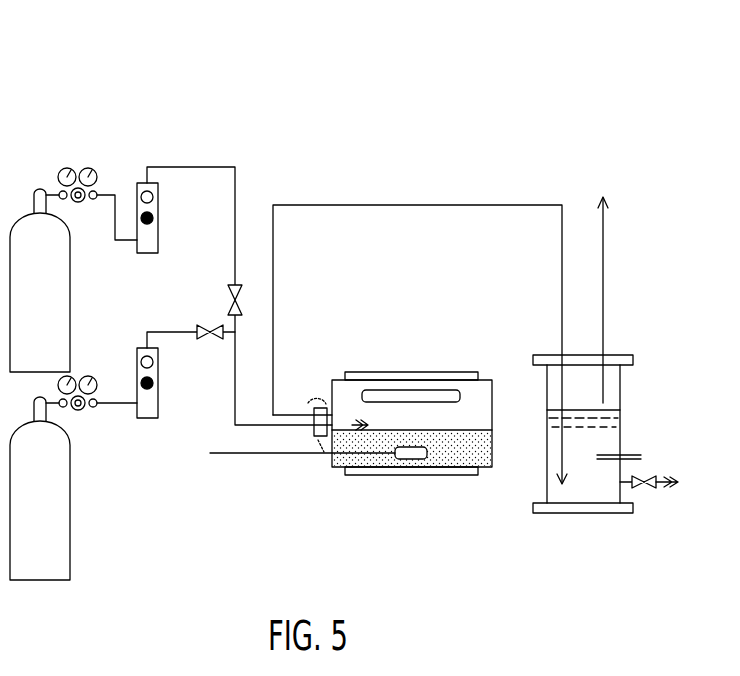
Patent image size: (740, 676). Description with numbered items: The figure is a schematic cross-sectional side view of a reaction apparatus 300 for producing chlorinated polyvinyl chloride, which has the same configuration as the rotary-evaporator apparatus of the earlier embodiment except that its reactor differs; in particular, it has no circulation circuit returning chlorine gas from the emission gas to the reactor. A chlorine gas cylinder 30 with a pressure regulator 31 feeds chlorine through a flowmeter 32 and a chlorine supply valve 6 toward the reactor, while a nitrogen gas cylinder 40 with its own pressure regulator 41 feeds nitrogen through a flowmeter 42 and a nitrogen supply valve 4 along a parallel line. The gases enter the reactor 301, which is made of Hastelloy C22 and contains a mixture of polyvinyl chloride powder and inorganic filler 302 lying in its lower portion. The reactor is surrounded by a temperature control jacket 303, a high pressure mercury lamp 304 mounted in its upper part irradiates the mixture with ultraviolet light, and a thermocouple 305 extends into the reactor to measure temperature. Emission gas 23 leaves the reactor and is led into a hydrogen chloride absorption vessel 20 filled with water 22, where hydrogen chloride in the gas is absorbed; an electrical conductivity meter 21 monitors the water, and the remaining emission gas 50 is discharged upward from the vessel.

The reaction apparatus 300 is at (148, 80).
The chlorine gas cylinder 30 is at (70, 296).
The pressure regulator 31 is at (68, 168).
The flowmeter 32 is at (160, 207).
The nitrogen gas cylinder 40 is at (70, 503).
The pressure regulator 41 is at (90, 376).
The flowmeter 42 is at (160, 402).
The chlorine supply valve 6 is at (227, 300).
The nitrogen supply valve 4 is at (208, 345).
The reactor 301 is at (497, 380).
The mixture of polyvinyl chloride powder and inorganic filler 302 is at (498, 470).
The temperature control jacket 303 is at (418, 477).
The high pressure mercury lamp 304 is at (405, 380).
The thermocouple 305 is at (268, 458).
The hydrogen chloride absorption vessel 20 is at (583, 514).
The electrical conductivity meter 21 is at (643, 457).
The water 22 is at (620, 426).
The emission gas 23 is at (552, 389).
The emission gas 50 is at (605, 298).